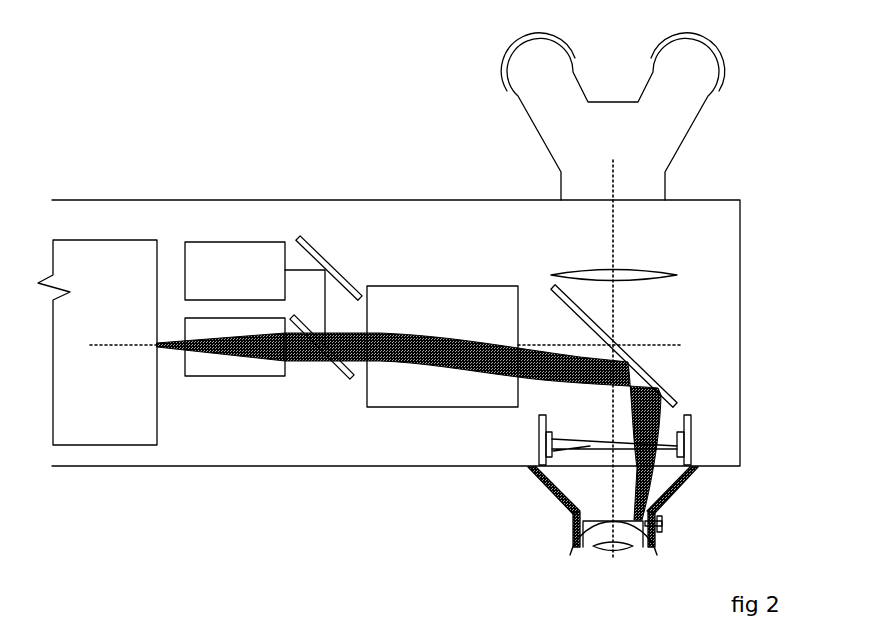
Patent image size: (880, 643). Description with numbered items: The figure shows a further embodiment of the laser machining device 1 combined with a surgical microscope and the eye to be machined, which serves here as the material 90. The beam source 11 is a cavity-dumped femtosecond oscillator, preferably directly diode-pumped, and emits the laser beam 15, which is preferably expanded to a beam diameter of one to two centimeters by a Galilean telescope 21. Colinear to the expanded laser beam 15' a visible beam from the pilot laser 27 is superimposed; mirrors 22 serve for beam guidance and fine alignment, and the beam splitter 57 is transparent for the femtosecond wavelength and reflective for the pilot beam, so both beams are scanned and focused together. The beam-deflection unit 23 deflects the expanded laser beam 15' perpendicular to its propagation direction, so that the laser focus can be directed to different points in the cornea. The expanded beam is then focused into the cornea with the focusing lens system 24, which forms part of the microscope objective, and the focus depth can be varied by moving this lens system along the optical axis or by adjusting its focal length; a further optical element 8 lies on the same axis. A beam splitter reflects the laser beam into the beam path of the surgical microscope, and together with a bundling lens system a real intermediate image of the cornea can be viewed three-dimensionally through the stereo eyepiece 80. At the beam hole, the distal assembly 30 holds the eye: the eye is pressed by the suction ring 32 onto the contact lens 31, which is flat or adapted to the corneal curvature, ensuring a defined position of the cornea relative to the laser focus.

The scanning device housing 1 is at (66, 212).
The beam source 11 is at (100, 342).
The pilot laser 27 is at (235, 271).
The mirrors 22 is at (329, 267).
The collimating optics 21 is at (233, 372).
The emitted laser beam 15 is at (409, 426).
The expanded laser beam 15' is at (305, 351).
The beam splitter 57 is at (322, 358).
The beam-deflection unit 23 is at (442, 346).
The focusing lens system 24 is at (537, 449).
The reference element 8 is at (693, 440).
The stereo eyepiece 80 is at (612, 116).
The distal optical assembly 30 is at (528, 470).
The contact lens 31 is at (648, 497).
The suction ring 32 is at (670, 527).
The material 90 is at (640, 551).